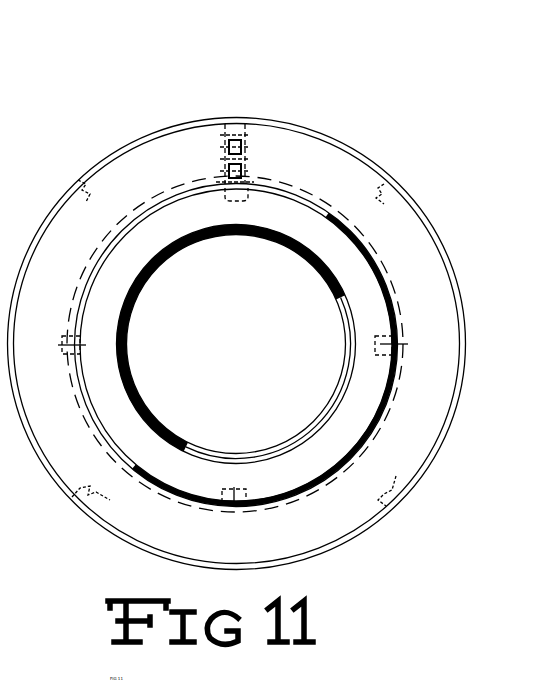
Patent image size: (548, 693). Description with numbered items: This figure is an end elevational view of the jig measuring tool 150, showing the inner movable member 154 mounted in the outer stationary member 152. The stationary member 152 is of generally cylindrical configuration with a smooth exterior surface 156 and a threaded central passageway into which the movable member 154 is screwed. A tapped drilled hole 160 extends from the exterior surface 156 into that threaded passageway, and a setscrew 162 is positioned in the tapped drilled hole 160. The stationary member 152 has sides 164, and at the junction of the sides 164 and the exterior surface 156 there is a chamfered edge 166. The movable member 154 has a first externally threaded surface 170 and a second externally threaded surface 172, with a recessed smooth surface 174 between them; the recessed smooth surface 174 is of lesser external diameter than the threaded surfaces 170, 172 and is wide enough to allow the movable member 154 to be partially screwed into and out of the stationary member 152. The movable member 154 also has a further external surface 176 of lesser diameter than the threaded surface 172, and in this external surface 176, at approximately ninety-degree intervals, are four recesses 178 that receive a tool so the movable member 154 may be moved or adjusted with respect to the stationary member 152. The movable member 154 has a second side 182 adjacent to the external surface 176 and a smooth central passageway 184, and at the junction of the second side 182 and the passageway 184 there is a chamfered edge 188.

The jig measuring tool 150 is at (386, 165).
The stationary member 152 is at (137, 136).
The movable member 154 is at (168, 438).
The smooth exterior surface 156 is at (206, 118).
The tapped drilled hole 160 is at (245, 140).
The setscrew 162 is at (252, 158).
The sides 164 is at (174, 173).
The chamfered edge 166 is at (449, 264).
The first externally threaded surface 170 is at (310, 195).
The second externally threaded surface 172 is at (86, 421).
The recessed smooth surface 174 is at (86, 202).
The further external surface 176 is at (184, 502).
The recesses 178 is at (68, 341).
The second side 182 is at (165, 240).
The smooth central passageway 184 is at (212, 452).
The chamfered edge 188 is at (262, 240).